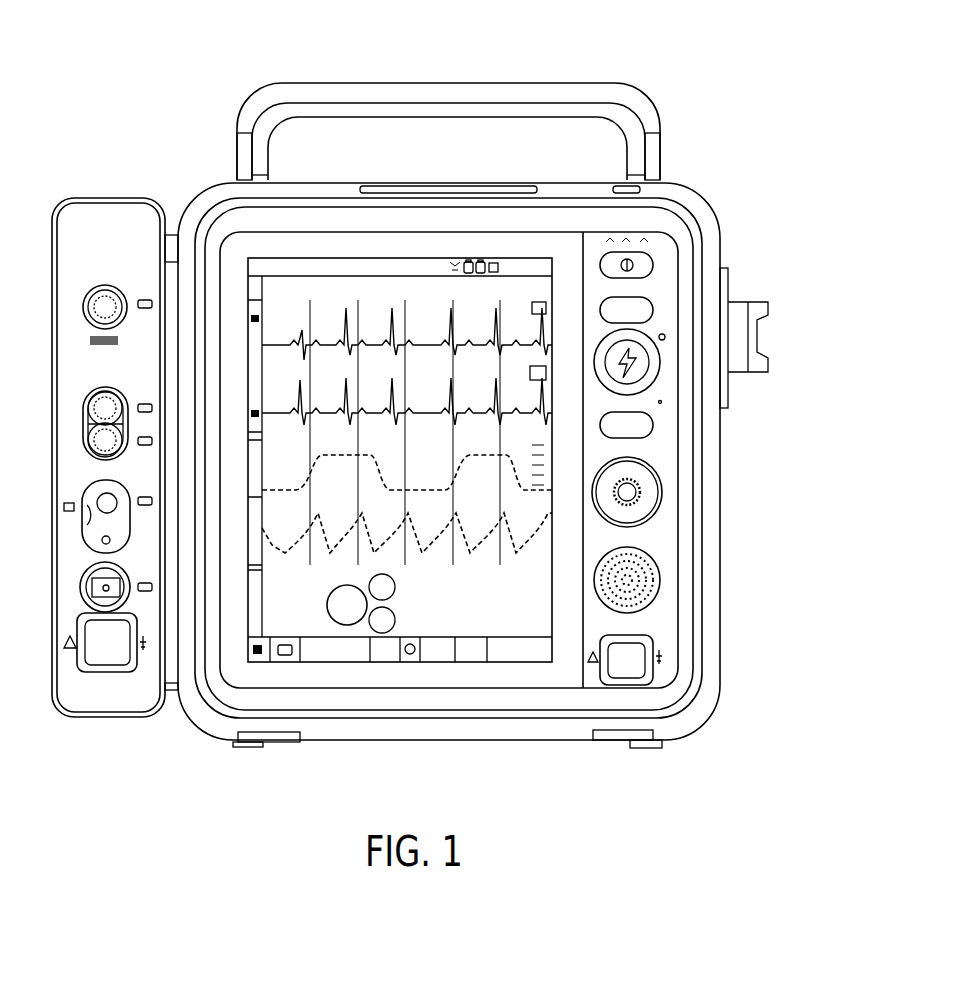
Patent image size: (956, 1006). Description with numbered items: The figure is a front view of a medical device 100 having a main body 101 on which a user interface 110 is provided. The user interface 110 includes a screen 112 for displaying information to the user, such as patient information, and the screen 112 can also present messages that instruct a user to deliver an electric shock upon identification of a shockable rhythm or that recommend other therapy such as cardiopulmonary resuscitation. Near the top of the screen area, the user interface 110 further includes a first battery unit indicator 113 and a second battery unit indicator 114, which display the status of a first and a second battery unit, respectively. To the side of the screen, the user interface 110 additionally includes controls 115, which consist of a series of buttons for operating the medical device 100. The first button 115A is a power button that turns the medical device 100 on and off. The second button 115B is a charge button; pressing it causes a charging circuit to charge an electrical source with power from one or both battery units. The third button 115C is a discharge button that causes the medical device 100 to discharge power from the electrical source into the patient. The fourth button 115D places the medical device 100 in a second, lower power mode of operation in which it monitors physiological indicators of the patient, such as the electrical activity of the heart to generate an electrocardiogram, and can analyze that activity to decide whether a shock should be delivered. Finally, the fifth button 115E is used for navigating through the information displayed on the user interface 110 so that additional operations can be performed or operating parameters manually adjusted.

The medical device 100 is at (684, 81).
The main body 101 is at (705, 688).
The user interface 110 is at (222, 245).
The screen 112 is at (353, 630).
The first battery unit indicator 113 is at (467, 255).
The second battery unit indicator 114 is at (485, 257).
The controls 115 is at (662, 221).
The first button 115A is at (653, 263).
The second button 115B is at (657, 310).
The third button 115C is at (643, 360).
The fourth button 115D is at (657, 425).
The fifth button 115E is at (640, 493).